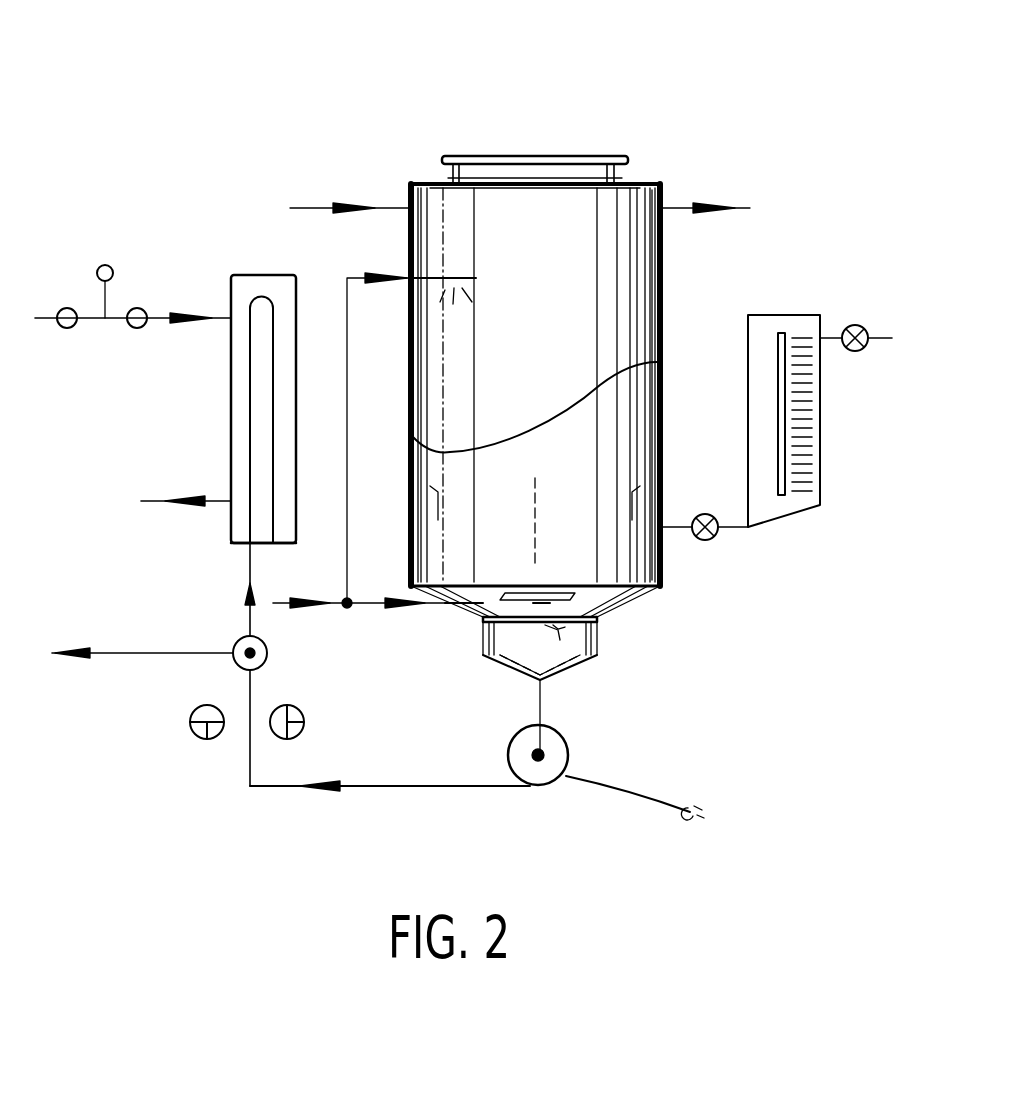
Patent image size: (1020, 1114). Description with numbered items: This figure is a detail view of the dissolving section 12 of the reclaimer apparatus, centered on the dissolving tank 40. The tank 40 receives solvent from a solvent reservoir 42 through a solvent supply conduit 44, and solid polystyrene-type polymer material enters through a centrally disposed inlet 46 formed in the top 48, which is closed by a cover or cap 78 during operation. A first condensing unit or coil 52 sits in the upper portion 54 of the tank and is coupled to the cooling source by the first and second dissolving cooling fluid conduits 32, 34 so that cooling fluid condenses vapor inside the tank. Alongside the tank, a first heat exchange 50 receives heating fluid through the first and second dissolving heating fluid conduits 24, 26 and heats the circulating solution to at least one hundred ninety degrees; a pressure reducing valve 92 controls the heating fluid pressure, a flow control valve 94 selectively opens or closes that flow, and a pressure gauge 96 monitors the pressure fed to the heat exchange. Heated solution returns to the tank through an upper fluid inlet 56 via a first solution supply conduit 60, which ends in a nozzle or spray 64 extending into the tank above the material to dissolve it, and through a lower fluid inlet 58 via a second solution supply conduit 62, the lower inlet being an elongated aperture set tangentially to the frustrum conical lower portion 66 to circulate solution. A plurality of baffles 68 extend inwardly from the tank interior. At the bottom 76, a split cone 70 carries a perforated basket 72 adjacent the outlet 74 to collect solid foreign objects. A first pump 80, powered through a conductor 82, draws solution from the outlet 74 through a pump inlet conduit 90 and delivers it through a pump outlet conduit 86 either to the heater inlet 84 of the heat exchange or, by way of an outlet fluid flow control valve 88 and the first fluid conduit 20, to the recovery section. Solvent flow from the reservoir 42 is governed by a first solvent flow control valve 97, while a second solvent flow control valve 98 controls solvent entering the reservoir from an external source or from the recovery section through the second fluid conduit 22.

The dissolving section 12 is at (513, 95).
The first fluid conduit 20 is at (160, 653).
The second fluid conduit 22 is at (888, 345).
The first dissolving heating fluid conduit 24 is at (212, 312).
The second dissolving heating fluid conduit 26 is at (210, 497).
The first dissolving cooling fluid conduit 32 is at (375, 208).
The second dissolving cooling fluid conduit 34 is at (748, 208).
The dissolving tank 40 is at (662, 385).
The solvent reservoir 42 is at (798, 315).
The solvent supply conduit 44 is at (730, 527).
The centrally disposed inlet 46 is at (572, 172).
The top 48 is at (640, 184).
The first heat exchange 50 is at (231, 404).
The first condensing unit or coil 52 is at (588, 212).
The upper portion 54 is at (656, 296).
The upper fluid inlet 56 is at (398, 273).
The lower fluid inlet 58 is at (552, 580).
The first solution supply conduit 60 is at (349, 432).
The second solution supply conduit 62 is at (362, 608).
The nozzle or spray 64 is at (425, 278).
The frustrum conical lower portion 66 is at (640, 600).
The baffles 68 is at (438, 504).
The split cone 70 is at (570, 655).
The perforated basket 72 is at (495, 680).
The outlet 74 is at (592, 652).
The bottom 76 is at (470, 620).
The cover or cap 78 is at (500, 156).
The first pump 80 is at (565, 748).
The conductor 82 is at (622, 790).
The heater inlet 84 is at (240, 548).
The pump outlet conduit 86 is at (452, 782).
The outlet fluid flow control valve 88 is at (270, 653).
The pump inlet conduit 90 is at (540, 705).
The pressure reducing valve 92 is at (58, 310).
The flow control valve 94 is at (132, 328).
The pressure gauge 96 is at (110, 265).
The first solvent flow control valve 97 is at (703, 542).
The second solvent flow control valve 98 is at (845, 325).